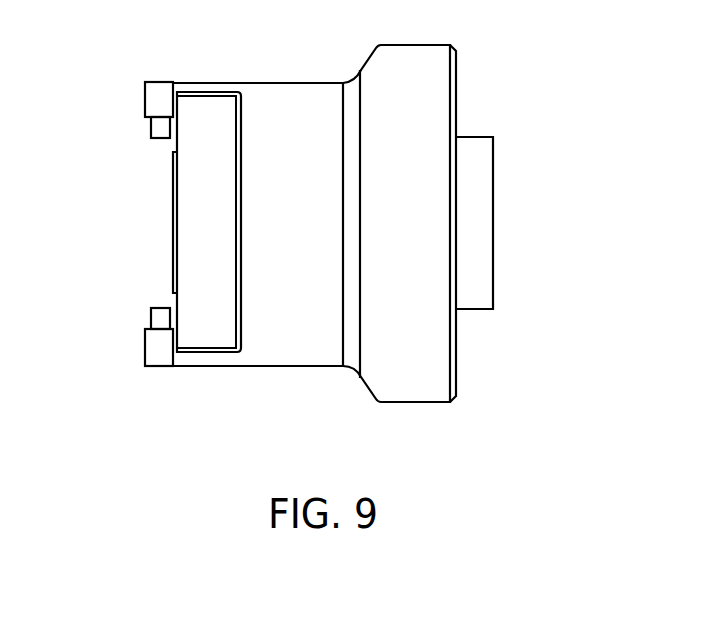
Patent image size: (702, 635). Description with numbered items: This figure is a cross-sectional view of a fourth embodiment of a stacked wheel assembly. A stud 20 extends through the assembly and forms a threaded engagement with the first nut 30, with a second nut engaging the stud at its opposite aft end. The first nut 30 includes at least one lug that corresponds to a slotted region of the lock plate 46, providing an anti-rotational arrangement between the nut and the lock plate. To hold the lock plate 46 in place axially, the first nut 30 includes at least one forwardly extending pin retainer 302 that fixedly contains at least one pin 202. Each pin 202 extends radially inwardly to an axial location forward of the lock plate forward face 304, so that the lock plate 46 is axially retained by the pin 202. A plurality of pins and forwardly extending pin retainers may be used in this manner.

The stud 20 is at (470, 234).
The first nut 30 is at (428, 103).
The lock plate 46 is at (207, 178).
The pin 202 is at (158, 126).
The forwardly extending pin retainer 302 is at (162, 101).
The lock plate forward face 304 is at (172, 150).